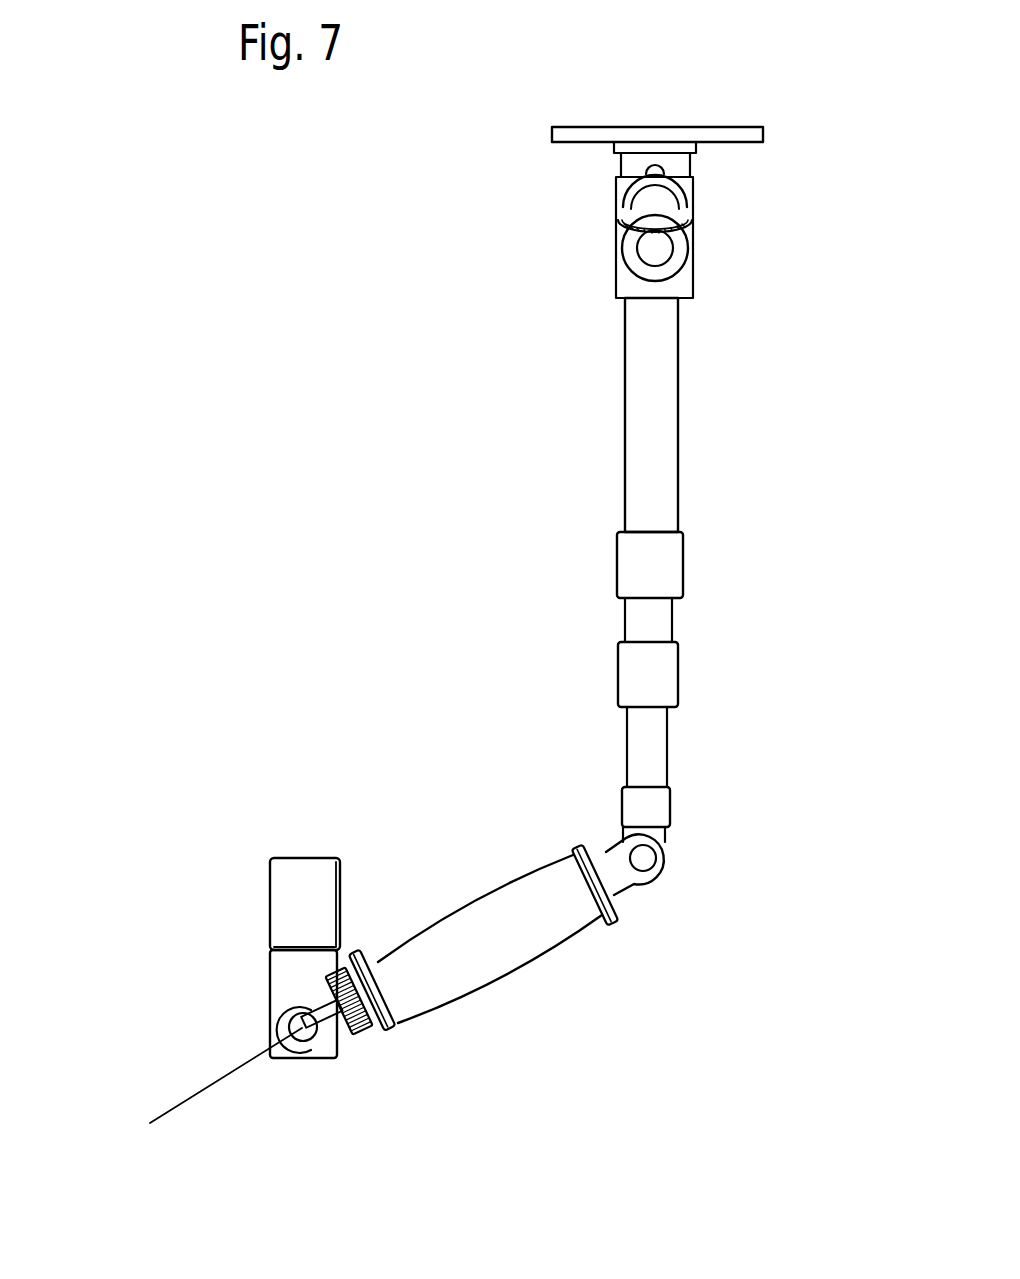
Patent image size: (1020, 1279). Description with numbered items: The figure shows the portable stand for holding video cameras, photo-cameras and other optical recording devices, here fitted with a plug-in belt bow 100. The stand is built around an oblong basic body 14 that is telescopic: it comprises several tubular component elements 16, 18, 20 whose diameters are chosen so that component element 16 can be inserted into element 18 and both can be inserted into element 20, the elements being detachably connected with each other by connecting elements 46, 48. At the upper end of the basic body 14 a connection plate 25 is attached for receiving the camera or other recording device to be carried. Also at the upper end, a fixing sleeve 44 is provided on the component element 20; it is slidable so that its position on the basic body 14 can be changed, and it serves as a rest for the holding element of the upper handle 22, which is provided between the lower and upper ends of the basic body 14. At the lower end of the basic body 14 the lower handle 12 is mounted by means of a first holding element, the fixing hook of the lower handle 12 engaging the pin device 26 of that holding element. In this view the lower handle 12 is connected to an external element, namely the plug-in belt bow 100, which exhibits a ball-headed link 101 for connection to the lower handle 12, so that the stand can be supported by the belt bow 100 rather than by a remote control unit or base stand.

The lower handle 12 is at (552, 982).
The basic body 14 is at (570, 456).
The tubular component element 16 is at (633, 755).
The tubular component element 18 is at (640, 613).
The tubular component element 20 is at (668, 433).
The upper handle 22 is at (622, 201).
The connection plate 25 is at (712, 138).
The pin device 26 is at (643, 858).
The fixing sleeve 44 is at (677, 287).
The connecting element 46 is at (668, 565).
The connecting element 48 is at (665, 670).
The plug-in belt bow 100 is at (254, 928).
The ball-headed link 101 is at (178, 1088).